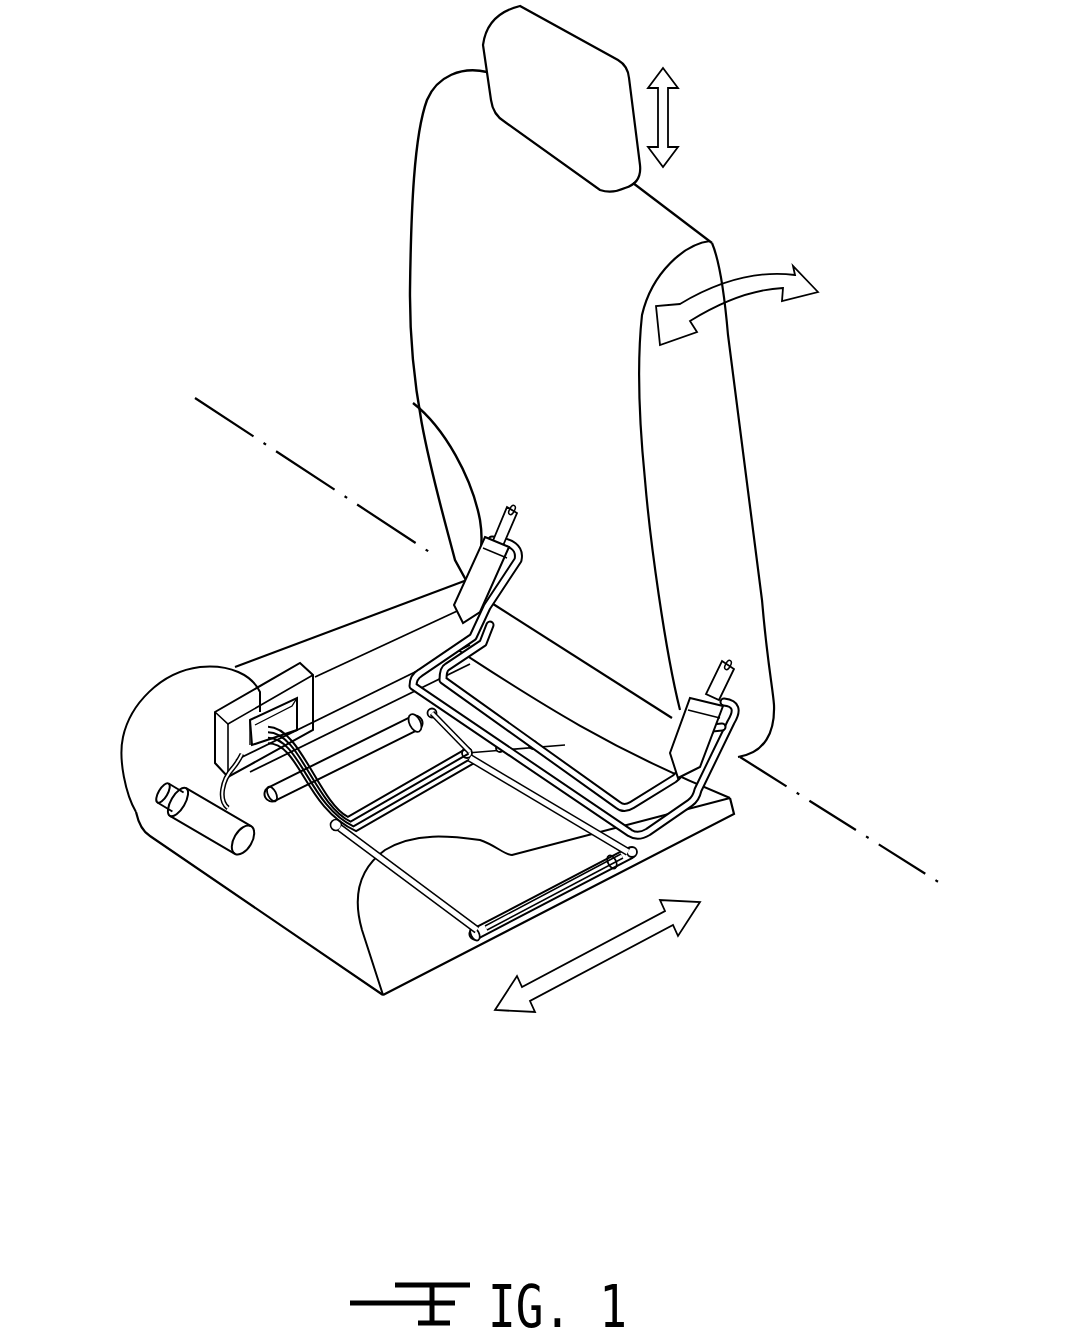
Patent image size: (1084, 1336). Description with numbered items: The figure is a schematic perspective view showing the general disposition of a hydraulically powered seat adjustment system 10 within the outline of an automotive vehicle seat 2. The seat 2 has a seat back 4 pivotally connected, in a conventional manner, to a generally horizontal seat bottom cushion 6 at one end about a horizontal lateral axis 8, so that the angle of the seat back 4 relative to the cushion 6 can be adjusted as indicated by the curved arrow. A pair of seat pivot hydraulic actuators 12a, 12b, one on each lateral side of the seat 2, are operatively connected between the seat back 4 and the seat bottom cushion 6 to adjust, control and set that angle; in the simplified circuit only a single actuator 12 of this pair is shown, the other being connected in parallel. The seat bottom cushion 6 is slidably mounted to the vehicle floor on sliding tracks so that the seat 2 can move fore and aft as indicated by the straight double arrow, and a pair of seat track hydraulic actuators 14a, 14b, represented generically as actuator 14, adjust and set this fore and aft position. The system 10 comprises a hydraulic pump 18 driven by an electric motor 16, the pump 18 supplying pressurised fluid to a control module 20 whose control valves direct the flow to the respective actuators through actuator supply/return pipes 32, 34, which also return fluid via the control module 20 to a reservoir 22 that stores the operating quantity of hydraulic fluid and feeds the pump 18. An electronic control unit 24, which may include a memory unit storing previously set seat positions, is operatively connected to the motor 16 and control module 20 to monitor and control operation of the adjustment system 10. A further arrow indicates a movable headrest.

The vehicle seat 2 is at (497, 562).
The seat back 4 is at (688, 472).
The seat bottom cushion 6 is at (397, 953).
The horizontal lateral axis 8 is at (842, 817).
The hydraulic seat adjustment system 10 is at (287, 872).
The seat pivot hydraulic actuator 12 is at (593, 539).
The seat pivot hydraulic actuator 12a is at (413, 403).
The seat pivot hydraulic actuator 12b is at (722, 716).
The seat track hydraulic actuator 14 is at (415, 795).
The seat track hydraulic actuator 14a is at (367, 747).
The seat track hydraulic actuator 14b is at (527, 913).
The electric motor 16 is at (213, 828).
The hydraulic pump 18 is at (172, 795).
The control module 20 is at (202, 654).
The reservoir 22 is at (273, 721).
The electronic control unit 24 is at (273, 721).
The actuator supply/return pipe 32 is at (457, 637).
The actuator supply/return pipe 34 is at (386, 808).